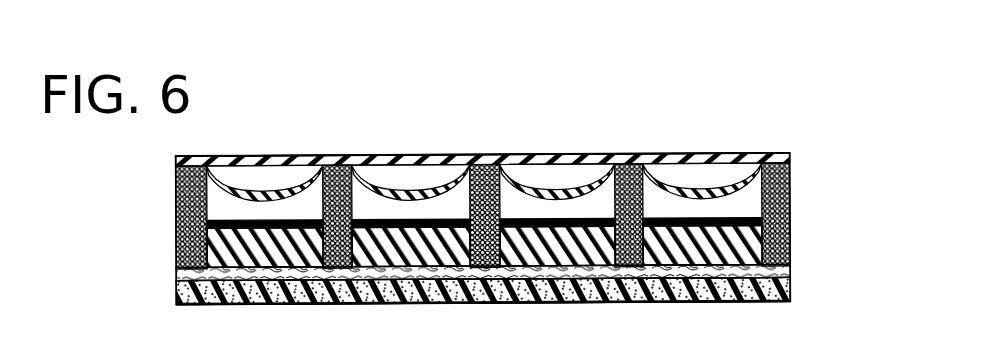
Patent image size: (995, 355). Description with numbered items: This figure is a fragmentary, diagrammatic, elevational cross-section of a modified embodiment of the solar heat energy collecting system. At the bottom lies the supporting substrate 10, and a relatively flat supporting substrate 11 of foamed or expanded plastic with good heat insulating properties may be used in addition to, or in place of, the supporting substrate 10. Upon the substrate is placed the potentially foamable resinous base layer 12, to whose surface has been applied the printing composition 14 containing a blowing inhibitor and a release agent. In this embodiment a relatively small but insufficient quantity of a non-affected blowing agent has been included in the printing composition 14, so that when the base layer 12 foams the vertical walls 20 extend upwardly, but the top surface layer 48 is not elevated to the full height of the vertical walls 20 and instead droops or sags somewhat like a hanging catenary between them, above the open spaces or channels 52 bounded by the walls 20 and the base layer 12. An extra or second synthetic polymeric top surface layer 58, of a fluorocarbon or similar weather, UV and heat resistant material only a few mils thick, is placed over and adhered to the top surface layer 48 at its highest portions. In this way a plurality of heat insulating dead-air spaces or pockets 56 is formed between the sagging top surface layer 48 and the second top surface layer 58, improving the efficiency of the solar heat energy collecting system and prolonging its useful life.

The supporting substrate 10 is at (790, 267).
The relatively flat supporting substrate 11 is at (790, 293).
The resinous base layer 12 is at (232, 262).
The printing composition 14 is at (270, 224).
The vertical walls 20 is at (360, 168).
The top surface layer 48 is at (215, 162).
The chamber 52 is at (312, 216).
The dead-air spaces or pockets 56 is at (290, 176).
The second synthetic polymeric top surface layer 58 is at (466, 162).